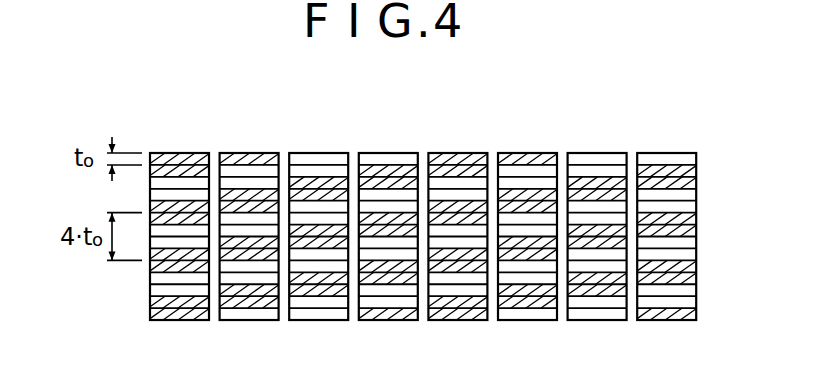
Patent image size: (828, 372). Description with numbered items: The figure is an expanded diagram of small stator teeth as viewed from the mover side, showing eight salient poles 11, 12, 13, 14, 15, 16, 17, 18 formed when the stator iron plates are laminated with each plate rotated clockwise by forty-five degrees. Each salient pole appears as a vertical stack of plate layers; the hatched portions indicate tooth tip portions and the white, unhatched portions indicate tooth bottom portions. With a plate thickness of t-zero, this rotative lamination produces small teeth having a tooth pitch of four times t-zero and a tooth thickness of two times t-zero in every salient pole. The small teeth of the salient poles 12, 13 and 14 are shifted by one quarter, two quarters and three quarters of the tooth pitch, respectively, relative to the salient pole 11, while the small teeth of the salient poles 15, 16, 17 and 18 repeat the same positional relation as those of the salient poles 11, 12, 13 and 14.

The salient pole 11 is at (180, 153).
The salient pole 12 is at (249, 153).
The salient pole 13 is at (319, 153).
The salient pole 14 is at (388, 153).
The salient pole 15 is at (458, 153).
The salient pole 16 is at (528, 153).
The salient pole 17 is at (597, 153).
The salient pole 18 is at (667, 153).